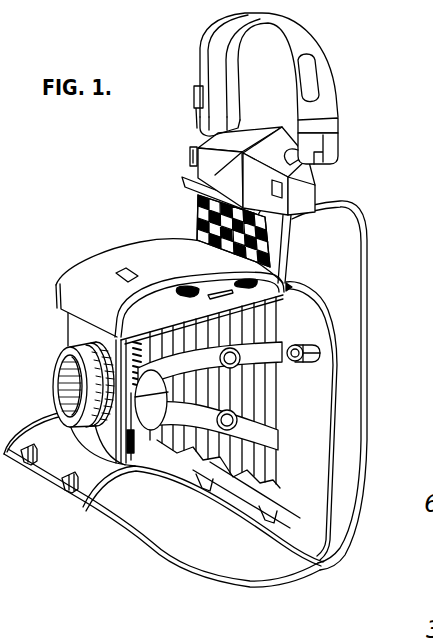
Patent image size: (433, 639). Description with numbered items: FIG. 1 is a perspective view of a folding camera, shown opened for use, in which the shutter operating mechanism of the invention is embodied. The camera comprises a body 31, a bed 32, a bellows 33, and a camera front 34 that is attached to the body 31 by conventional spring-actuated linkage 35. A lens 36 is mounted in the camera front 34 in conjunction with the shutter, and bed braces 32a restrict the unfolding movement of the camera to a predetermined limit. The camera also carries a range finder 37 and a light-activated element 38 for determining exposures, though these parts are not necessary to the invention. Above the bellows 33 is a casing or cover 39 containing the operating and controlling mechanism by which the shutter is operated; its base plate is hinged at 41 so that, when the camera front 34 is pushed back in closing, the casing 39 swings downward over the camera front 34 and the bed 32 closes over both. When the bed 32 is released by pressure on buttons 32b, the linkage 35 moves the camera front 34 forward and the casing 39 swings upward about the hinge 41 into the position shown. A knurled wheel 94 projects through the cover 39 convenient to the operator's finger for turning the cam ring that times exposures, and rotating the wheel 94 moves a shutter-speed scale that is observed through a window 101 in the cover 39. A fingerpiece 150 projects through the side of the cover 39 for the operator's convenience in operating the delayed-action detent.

The body 31 is at (350, 288).
The bed 32 is at (177, 553).
The bed braces 32a is at (220, 490).
The buttons 32b is at (320, 354).
The bellows 33 is at (283, 466).
The camera front 34 is at (68, 322).
The spring-actuated linkage 35 is at (276, 436).
The lens 36 is at (54, 385).
The range finder 37 is at (189, 153).
The light-activated element 38 is at (201, 213).
The casing or cover 39 is at (134, 257).
The hinge 41 is at (298, 281).
The knurled wheel 94 is at (177, 288).
The window 101 is at (116, 273).
The fingerpiece 150 is at (240, 281).